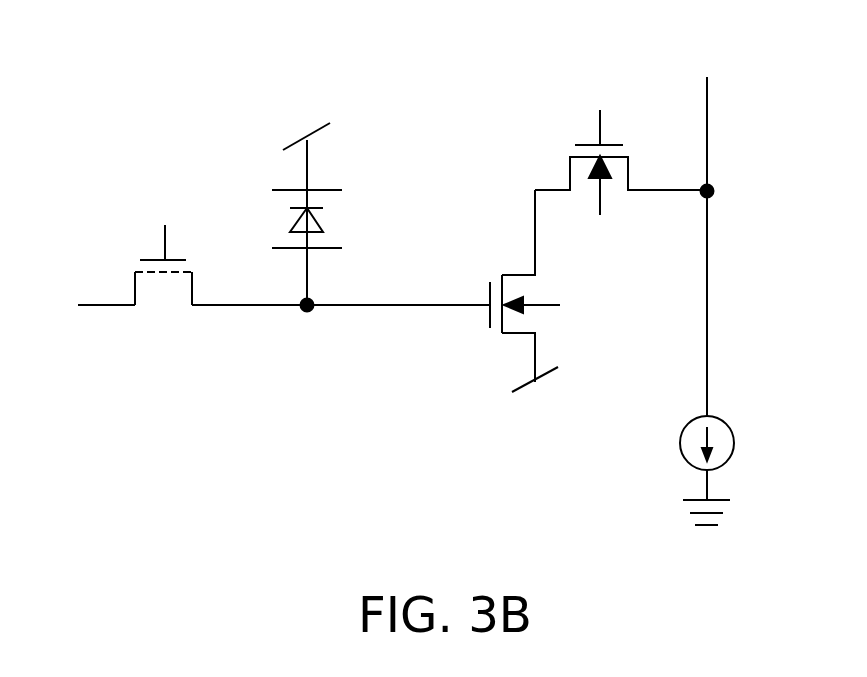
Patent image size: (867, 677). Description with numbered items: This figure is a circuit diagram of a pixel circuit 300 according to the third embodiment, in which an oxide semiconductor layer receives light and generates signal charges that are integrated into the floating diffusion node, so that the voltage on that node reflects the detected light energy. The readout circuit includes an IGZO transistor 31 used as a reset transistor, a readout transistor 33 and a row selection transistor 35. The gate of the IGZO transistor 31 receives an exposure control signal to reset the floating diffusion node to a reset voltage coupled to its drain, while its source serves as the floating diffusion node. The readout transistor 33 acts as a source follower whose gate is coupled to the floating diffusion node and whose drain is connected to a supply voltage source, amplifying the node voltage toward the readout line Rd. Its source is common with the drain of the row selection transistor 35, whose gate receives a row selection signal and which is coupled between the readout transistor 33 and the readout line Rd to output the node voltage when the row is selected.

The pixel circuit 300 is at (108, 72).
The IGZO transistor 31 is at (133, 248).
The readout transistor 33 is at (493, 347).
The row selection transistor 35 is at (627, 130).
The readout line Rd is at (707, 328).